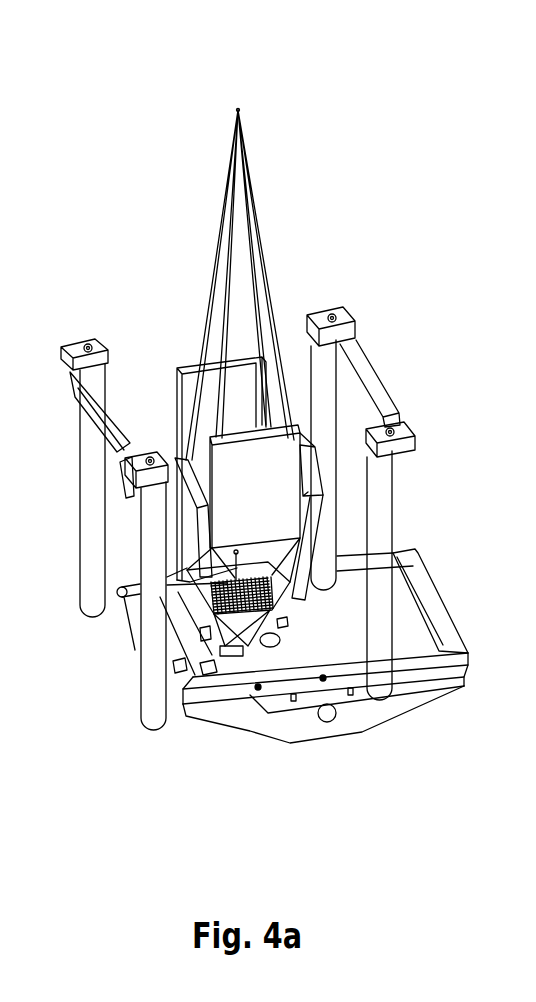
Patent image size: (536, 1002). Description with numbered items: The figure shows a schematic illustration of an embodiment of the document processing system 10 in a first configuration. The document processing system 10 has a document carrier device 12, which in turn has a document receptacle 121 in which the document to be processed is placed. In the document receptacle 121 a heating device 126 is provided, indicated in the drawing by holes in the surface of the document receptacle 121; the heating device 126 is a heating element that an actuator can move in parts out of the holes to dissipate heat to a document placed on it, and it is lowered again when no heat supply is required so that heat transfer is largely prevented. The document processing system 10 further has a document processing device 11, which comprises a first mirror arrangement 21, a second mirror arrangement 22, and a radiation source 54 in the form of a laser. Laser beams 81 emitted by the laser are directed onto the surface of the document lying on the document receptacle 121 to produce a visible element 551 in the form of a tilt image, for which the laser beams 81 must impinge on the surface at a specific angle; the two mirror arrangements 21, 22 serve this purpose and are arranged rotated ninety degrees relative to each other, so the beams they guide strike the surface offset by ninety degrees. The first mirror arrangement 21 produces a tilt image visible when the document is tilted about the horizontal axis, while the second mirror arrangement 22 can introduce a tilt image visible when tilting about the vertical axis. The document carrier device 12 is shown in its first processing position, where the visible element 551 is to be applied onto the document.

The document processing system 10 is at (99, 120).
The radiation source 54 is at (242, 108).
The laser beams 81 is at (224, 218).
The second mirror arrangement 22 is at (238, 446).
The first mirror arrangement 21 is at (193, 533).
The document processing device 11 is at (338, 400).
The heating device 126 is at (235, 589).
The visible element 551 is at (212, 669).
The document carrier device 12 is at (253, 722).
The document receptacle 121 is at (413, 643).